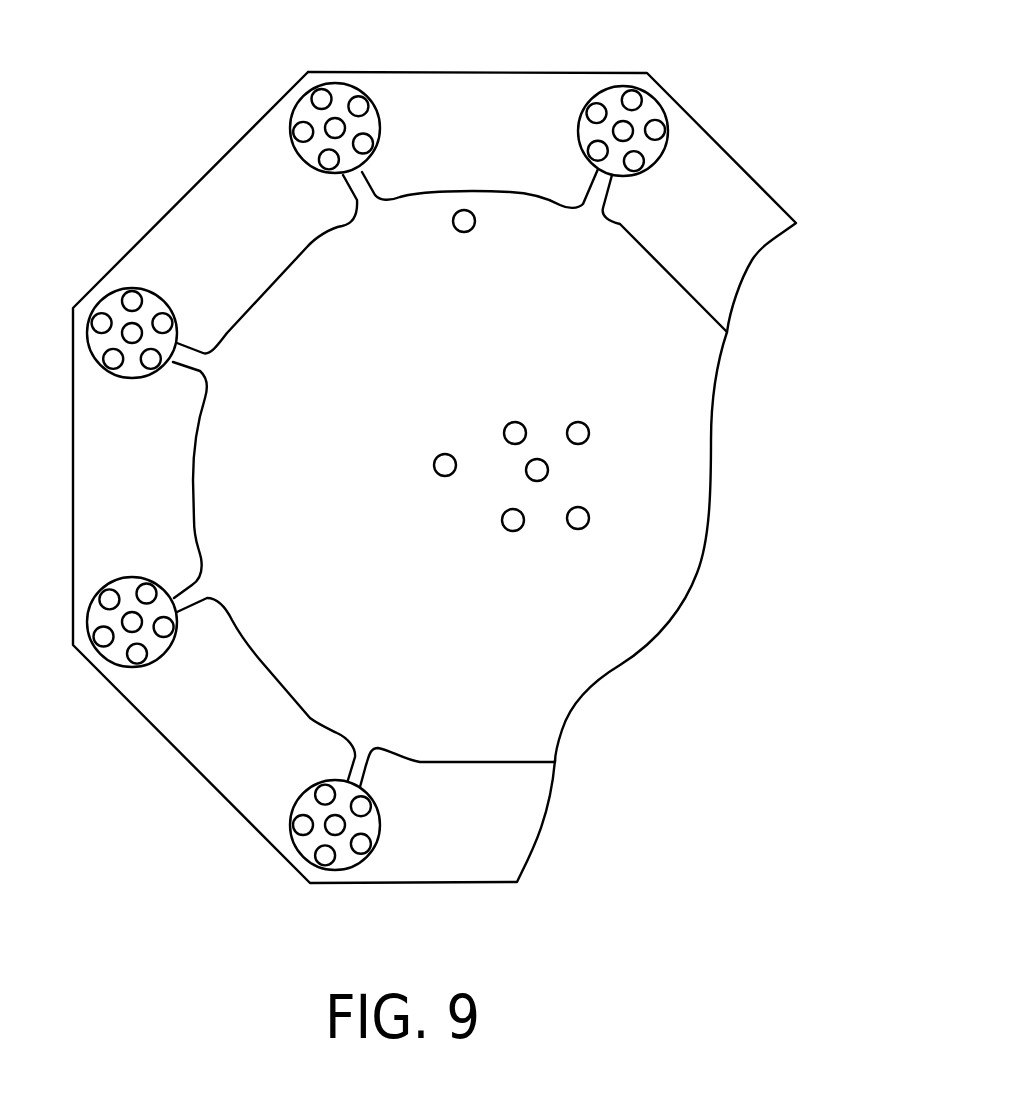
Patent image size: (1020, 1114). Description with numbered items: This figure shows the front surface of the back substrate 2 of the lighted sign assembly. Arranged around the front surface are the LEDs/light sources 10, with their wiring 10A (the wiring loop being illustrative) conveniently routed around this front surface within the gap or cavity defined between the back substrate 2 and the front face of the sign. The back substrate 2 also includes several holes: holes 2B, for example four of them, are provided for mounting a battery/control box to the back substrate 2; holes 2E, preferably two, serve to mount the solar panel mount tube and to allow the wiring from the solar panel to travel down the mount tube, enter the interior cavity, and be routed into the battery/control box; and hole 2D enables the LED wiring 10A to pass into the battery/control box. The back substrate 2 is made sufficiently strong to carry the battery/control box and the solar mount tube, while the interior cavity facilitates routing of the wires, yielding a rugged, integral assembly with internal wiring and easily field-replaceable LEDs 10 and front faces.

The back substrate 2 is at (200, 178).
The wiring 10A is at (510, 192).
The LEDs/light sources 10 is at (677, 162).
The hole 2D is at (548, 470).
The holes 2B is at (573, 530).
The holes 2E is at (442, 455).